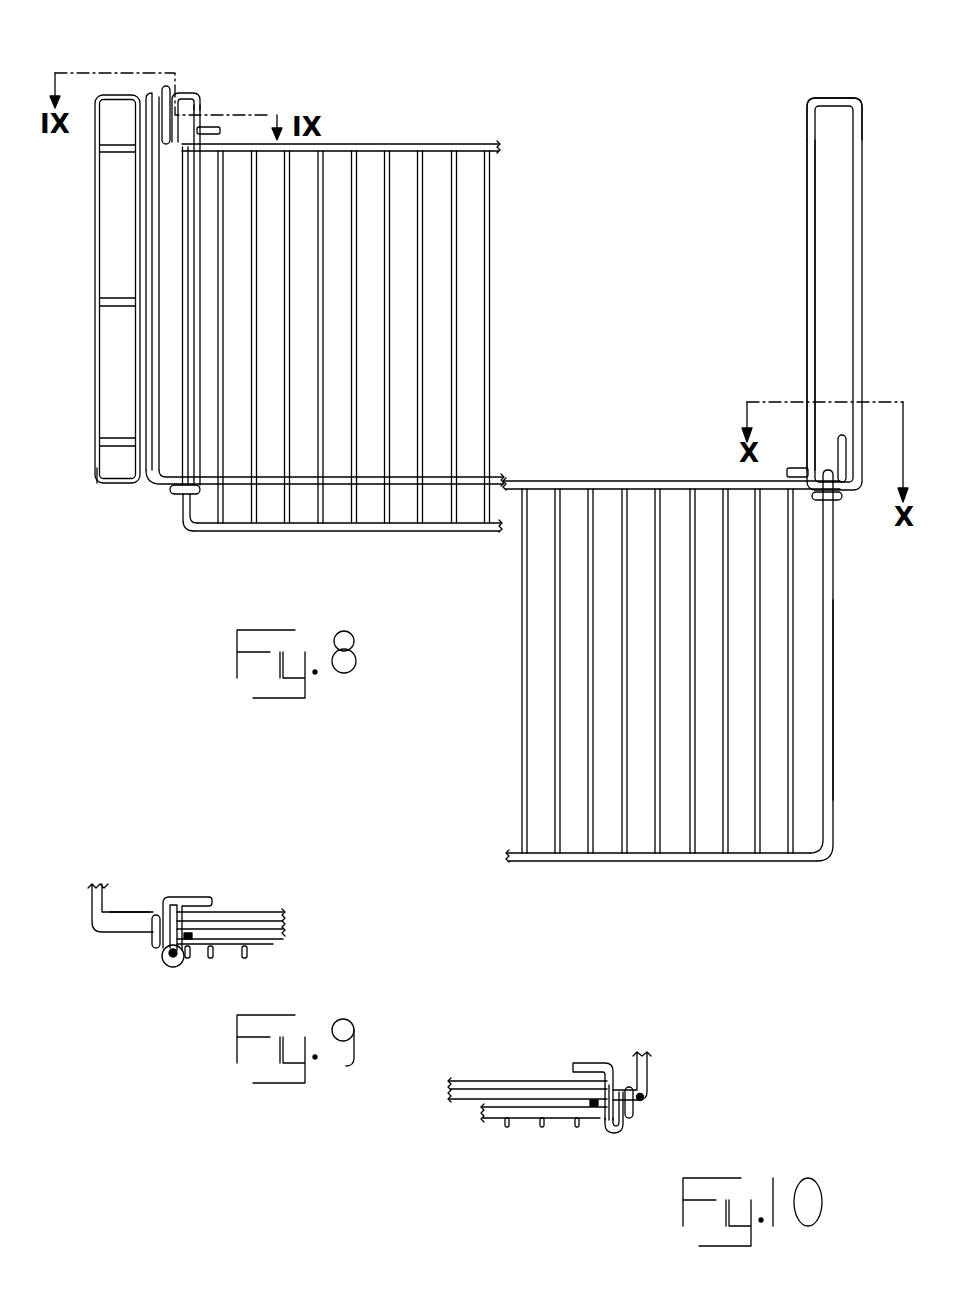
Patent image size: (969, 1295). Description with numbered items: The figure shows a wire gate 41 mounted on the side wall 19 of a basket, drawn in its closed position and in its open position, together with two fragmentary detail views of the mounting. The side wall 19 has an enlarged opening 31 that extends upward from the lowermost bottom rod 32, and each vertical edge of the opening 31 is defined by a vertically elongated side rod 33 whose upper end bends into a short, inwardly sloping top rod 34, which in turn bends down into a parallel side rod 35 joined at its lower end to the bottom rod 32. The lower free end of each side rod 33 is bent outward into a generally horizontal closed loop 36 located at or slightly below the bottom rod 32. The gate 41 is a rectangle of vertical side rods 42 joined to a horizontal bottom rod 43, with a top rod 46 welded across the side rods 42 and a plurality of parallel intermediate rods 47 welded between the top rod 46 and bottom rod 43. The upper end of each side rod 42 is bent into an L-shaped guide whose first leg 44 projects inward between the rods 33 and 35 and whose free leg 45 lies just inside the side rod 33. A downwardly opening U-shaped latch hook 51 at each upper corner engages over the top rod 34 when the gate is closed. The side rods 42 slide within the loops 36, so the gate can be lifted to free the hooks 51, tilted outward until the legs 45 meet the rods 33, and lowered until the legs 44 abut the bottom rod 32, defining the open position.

In FIG. 8, the basket side wall 19 is at (88, 468).
In FIG. 8, the opening 31 is at (682, 175).
In FIG. 8, the bottom rod 32 is at (455, 508).
In FIG. 9, the bottom rod 32 is at (268, 925).
In FIG. 10, the bottom rod 32 is at (473, 1093).
In FIG. 8, the side rod 33 is at (197, 418).
In FIG. 10, the side rod 33 is at (600, 1105).
In FIG. 8, the top rod 34 is at (187, 97).
In FIG. 9, the top rod 34 is at (145, 928).
In FIG. 8, the side rod 35 is at (153, 240).
In FIG. 10, the side rod 35 is at (650, 1095).
In FIG. 8, the loop 36 is at (173, 494).
In FIG. 9, the loop 36 is at (170, 967).
In FIG. 10, the loop 36 is at (625, 1128).
In FIG. 8, the gate 41 is at (200, 545).
In FIG. 8, the side rod 42 is at (185, 367).
In FIG. 9, the side rod 42 is at (177, 957).
In FIG. 10, the side rod 42 is at (610, 1130).
In FIG. 8, the bottom rod 43 is at (405, 528).
In FIG. 9, the leg portion 44 is at (165, 920).
In FIG. 10, the leg portion 44 is at (610, 1070).
In FIG. 8, the leg portion 45 is at (212, 128).
In FIG. 9, the leg portion 45 is at (187, 900).
In FIG. 10, the leg portion 45 is at (585, 1065).
In FIG. 8, the top rod 46 is at (472, 148).
In FIG. 9, the top rod 46 is at (255, 948).
In FIG. 10, the top rod 46 is at (523, 1113).
In FIG. 8, the intermediate rods 47 is at (458, 250).
In FIG. 8, the latch hook 51 is at (167, 92).
In FIG. 9, the latch hook 51 is at (152, 940).
In FIG. 10, the latch hook 51 is at (634, 1105).